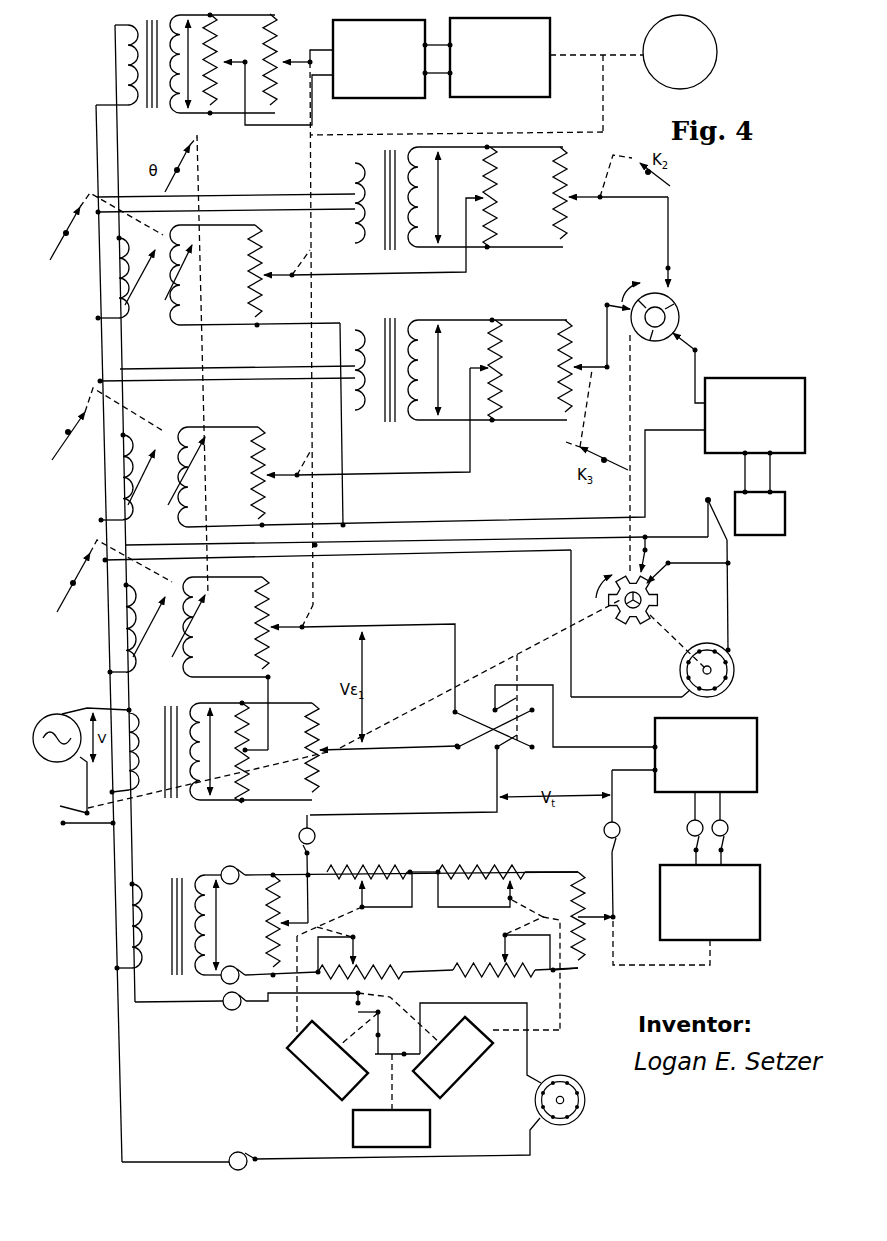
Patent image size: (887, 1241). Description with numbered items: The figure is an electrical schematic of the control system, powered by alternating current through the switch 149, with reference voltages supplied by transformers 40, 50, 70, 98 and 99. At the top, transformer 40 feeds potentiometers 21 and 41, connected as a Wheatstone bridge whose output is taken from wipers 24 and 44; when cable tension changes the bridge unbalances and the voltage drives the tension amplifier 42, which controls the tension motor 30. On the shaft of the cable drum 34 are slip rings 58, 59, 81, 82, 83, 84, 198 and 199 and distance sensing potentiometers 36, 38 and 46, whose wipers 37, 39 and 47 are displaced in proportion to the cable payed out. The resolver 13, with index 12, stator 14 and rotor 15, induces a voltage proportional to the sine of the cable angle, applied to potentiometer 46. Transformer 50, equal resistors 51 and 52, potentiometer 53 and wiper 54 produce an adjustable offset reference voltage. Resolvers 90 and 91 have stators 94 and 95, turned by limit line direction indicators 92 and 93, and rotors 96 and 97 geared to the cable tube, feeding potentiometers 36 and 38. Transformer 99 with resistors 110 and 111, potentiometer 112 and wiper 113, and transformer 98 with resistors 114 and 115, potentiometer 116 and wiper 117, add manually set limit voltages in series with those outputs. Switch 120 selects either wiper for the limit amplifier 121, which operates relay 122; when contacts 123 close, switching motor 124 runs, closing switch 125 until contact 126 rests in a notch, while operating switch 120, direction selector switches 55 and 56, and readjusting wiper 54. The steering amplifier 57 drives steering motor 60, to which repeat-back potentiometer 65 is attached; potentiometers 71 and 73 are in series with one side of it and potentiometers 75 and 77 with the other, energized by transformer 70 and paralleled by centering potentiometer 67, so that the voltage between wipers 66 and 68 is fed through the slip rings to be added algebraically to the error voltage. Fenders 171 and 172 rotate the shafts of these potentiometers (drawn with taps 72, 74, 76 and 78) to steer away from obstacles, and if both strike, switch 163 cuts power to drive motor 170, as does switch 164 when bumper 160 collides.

The index 12 is at (108, 576).
The resolver 13 is at (189, 663).
The stator 14 is at (137, 629).
The rotor 15 is at (221, 663).
The potentiometer 21 is at (294, 99).
The wiper 24 is at (283, 59).
The tension motor 30 is at (500, 57).
The cable drum 34 is at (680, 52).
The distance sensing potentiometer 36 is at (242, 271).
The wiper 37 is at (373, 248).
The distance sensing potentiometer 38 is at (247, 473).
The wiper 39 is at (289, 475).
The transformer 40 is at (185, 72).
The potentiometer 41 is at (269, 98).
The tension amplifier 42 is at (379, 59).
The wiper 44 is at (223, 59).
The distance sensing potentiometer 46 is at (250, 623).
The wiper 47 is at (363, 658).
The transformer 50 is at (211, 758).
The resistor 51 is at (243, 776).
The resistor 52 is at (233, 728).
The potentiometer 53 is at (300, 747).
The wiper 54 is at (390, 758).
The direction selector switch 55 is at (562, 717).
The direction selector switch 56 is at (413, 775).
The steering amplifier 57 is at (706, 755).
The slip ring 58 is at (733, 828).
The slip ring 59 is at (682, 828).
The steering motor 60 is at (686, 915).
The repeat-back potentiometer 65 is at (561, 921).
The wiper 66 is at (597, 908).
The potentiometer 67 is at (260, 921).
The wiper 68 is at (294, 912).
The transformer 70 is at (168, 914).
The potentiometer 71 is at (367, 862).
The resistor tap 72 is at (354, 904).
The potentiometer 73 is at (481, 862).
The resistor tap 74 is at (499, 951).
The potentiometer 75 is at (494, 981).
The resistor tap 76 is at (516, 953).
The potentiometer 77 is at (365, 982).
The resistor tap 78 is at (349, 954).
The slip ring 81 is at (269, 964).
The slip ring 82 is at (321, 869).
The slip ring 83 is at (597, 869).
The slip ring 84 is at (398, 864).
The resolver 90 is at (218, 280).
The resolver 91 is at (222, 481).
The limit line directional indicator 92 is at (96, 226).
The limit line direction indicator 93 is at (100, 424).
The stator 94 is at (126, 278).
The stator 95 is at (127, 478).
The rotor 96 is at (252, 276).
The rotor 97 is at (257, 477).
The transformer 98 is at (333, 376).
The transformer 99 is at (459, 203).
The resistor 110 is at (502, 172).
The resistor 111 is at (502, 222).
The potentiometer 112 is at (542, 193).
The wiper 113 is at (618, 208).
The resistor 114 is at (507, 345).
The resistor 115 is at (507, 395).
The potentiometer 116 is at (549, 366).
The wiper 117 is at (602, 336).
The single pole double throw switch 120 is at (669, 343).
The limit amplifier 121 is at (533, 451).
The relay 122 is at (760, 513).
The relay contacts 123 is at (701, 518).
The switching motor 124 is at (708, 656).
The switch 125 is at (646, 599).
The contact 126 is at (650, 556).
The switch 149 is at (77, 826).
The bumper 160 is at (391, 1100).
The switch 163 is at (381, 1018).
The switch 164 is at (458, 1043).
The drive motor 170 is at (434, 1117).
The fender 171 is at (327, 1060).
The fender 172 is at (486, 1057).
The slip ring 198 is at (246, 1010).
The slip ring 199 is at (190, 1151).